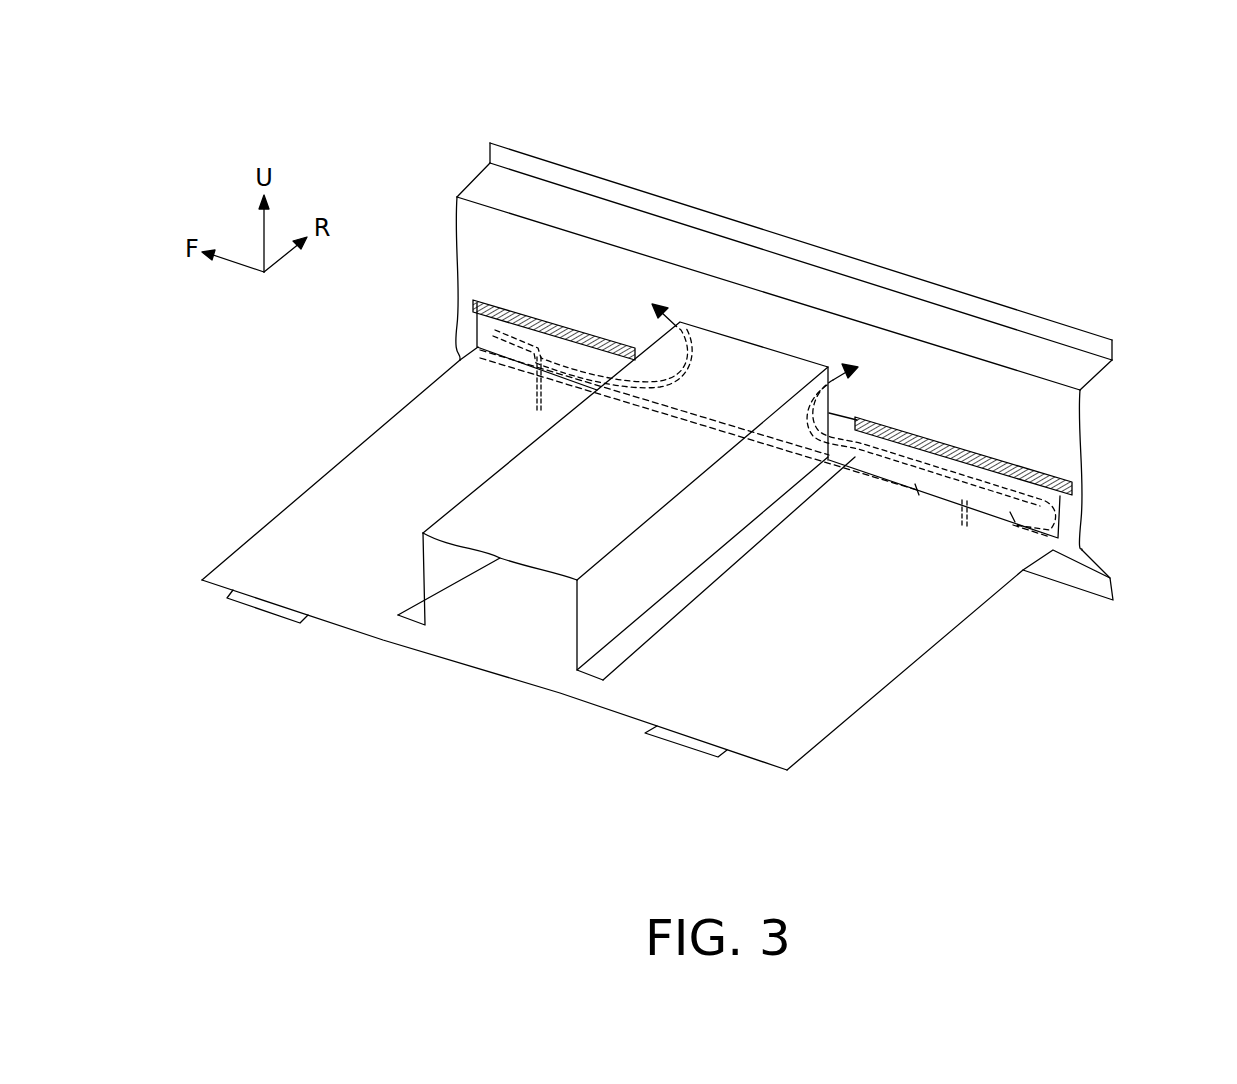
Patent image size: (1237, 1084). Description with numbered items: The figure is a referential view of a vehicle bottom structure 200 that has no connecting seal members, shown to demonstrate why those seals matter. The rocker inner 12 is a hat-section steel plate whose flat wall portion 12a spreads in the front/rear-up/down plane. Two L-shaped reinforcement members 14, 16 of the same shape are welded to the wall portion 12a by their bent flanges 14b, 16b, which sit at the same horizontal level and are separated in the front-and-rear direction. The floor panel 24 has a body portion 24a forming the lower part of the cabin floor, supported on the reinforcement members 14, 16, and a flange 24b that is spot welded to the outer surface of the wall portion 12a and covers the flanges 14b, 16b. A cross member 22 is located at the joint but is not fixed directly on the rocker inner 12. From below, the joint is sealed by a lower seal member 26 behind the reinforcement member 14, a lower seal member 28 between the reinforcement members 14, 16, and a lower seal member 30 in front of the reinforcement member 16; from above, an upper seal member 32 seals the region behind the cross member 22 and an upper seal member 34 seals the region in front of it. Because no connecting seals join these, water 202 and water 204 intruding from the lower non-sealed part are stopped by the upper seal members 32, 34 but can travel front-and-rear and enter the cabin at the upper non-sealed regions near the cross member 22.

The vehicle bottom structure 200 is at (965, 138).
The rocker inner 12 is at (1037, 310).
The wall portion 12a is at (1068, 417).
The reinforcement member 14 is at (677, 743).
The flange 14b is at (1003, 468).
The reinforcement member 16 is at (260, 615).
The flange 16b is at (520, 330).
The cross member 22 is at (518, 568).
The floor panel 24 is at (537, 687).
The body portion 24a is at (620, 698).
The flange 24b is at (1063, 510).
The lower seal member 26 is at (1058, 518).
The lower seal member 28 is at (712, 410).
The lower seal member 30 is at (480, 327).
The upper seal member 32 is at (937, 440).
The upper seal member 34 is at (565, 322).
The water 202 is at (965, 527).
The water 204 is at (533, 397).